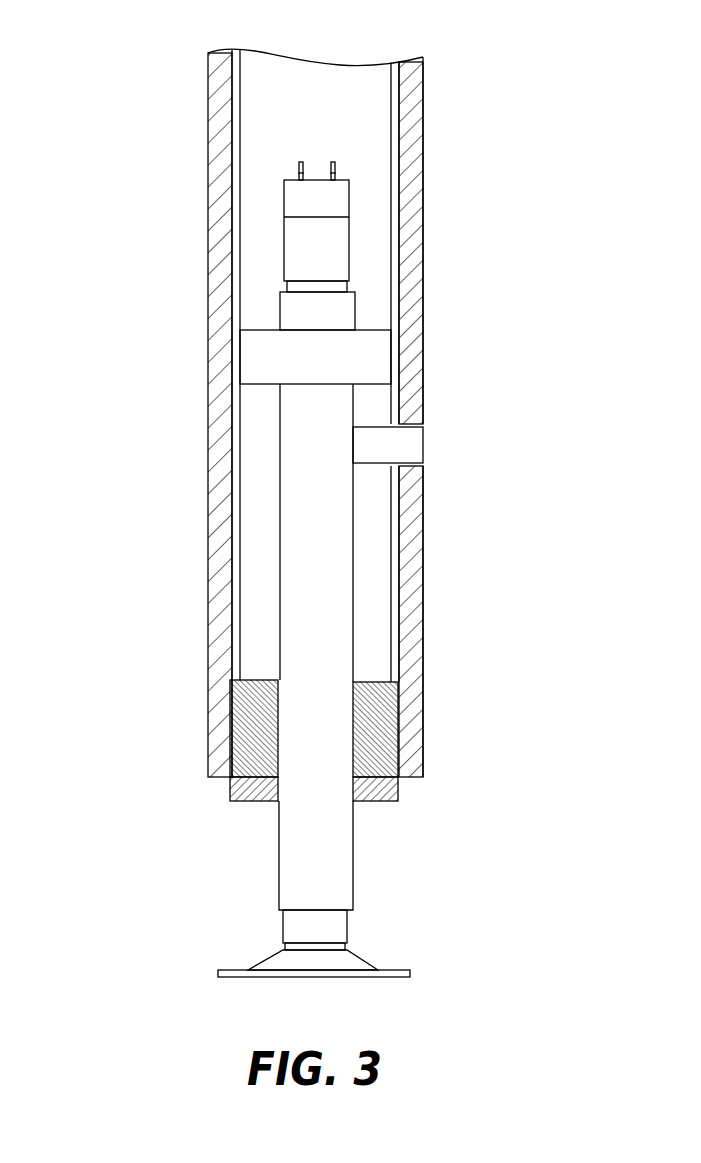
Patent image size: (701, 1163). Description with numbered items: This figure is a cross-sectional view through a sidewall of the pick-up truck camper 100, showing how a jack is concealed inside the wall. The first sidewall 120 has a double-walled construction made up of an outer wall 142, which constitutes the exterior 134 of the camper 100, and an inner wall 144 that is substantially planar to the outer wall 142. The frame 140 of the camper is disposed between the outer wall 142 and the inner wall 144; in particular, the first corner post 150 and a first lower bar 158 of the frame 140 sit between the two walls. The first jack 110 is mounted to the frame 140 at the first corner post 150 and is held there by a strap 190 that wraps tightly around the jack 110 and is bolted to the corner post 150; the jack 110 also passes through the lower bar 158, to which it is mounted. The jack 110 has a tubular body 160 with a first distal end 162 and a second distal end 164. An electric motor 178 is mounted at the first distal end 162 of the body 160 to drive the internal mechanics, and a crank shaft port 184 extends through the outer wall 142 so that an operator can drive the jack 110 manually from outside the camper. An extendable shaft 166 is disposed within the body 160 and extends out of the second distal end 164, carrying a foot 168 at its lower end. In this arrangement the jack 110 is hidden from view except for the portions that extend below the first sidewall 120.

The pick-up truck camper 100 is at (138, 73).
The frame 140 is at (320, 100).
The first sidewall 120 is at (232, 204).
The inner wall 144 is at (232, 548).
The outer wall 142 is at (412, 327).
The exterior 134 is at (423, 354).
The first corner post 150 is at (312, 221).
The electric motor 178 is at (297, 250).
The first distal end 162 is at (333, 309).
The strap 190 is at (246, 353).
The crank shaft port 184 is at (425, 440).
The first jack 110 is at (318, 680).
The tubular body 160 is at (327, 550).
The first lower bar 158 is at (355, 718).
The second distal end 164 is at (338, 860).
The extendable shaft 166 is at (340, 928).
The foot 168 is at (283, 962).